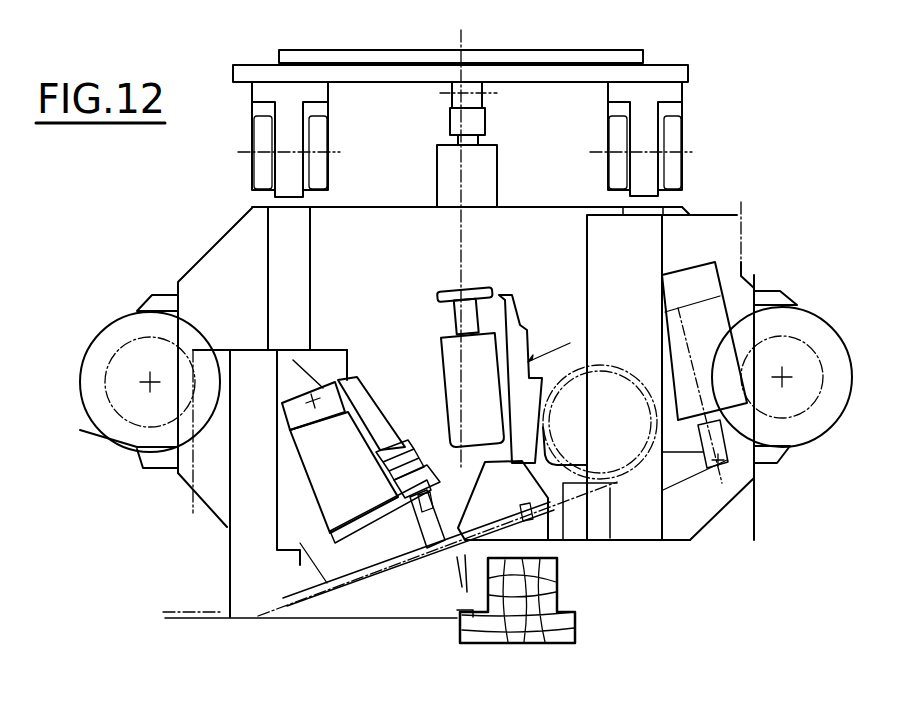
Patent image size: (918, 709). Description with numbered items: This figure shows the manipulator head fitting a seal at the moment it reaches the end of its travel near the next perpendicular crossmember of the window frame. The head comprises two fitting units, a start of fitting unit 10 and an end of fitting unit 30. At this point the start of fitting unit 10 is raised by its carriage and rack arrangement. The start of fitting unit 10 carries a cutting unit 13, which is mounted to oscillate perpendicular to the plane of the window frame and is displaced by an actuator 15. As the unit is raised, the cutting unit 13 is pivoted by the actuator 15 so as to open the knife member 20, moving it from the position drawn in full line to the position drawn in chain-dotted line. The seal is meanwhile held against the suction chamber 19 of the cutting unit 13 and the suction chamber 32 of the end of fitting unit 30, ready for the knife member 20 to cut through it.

The start of fitting unit 10 is at (648, 328).
The cutting unit 13 is at (565, 546).
The actuator 15 is at (712, 357).
The suction chamber 19 is at (507, 498).
The knife member 20 is at (443, 540).
The end of fitting unit 30 is at (210, 464).
The suction chamber 32 is at (352, 553).